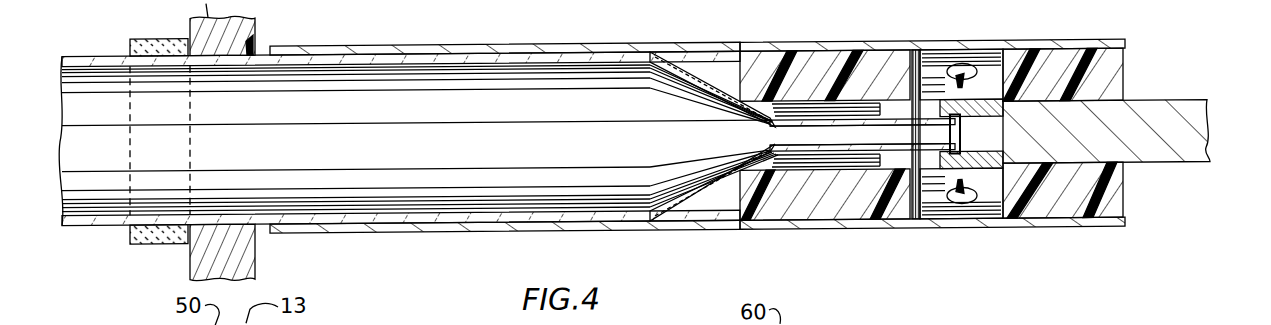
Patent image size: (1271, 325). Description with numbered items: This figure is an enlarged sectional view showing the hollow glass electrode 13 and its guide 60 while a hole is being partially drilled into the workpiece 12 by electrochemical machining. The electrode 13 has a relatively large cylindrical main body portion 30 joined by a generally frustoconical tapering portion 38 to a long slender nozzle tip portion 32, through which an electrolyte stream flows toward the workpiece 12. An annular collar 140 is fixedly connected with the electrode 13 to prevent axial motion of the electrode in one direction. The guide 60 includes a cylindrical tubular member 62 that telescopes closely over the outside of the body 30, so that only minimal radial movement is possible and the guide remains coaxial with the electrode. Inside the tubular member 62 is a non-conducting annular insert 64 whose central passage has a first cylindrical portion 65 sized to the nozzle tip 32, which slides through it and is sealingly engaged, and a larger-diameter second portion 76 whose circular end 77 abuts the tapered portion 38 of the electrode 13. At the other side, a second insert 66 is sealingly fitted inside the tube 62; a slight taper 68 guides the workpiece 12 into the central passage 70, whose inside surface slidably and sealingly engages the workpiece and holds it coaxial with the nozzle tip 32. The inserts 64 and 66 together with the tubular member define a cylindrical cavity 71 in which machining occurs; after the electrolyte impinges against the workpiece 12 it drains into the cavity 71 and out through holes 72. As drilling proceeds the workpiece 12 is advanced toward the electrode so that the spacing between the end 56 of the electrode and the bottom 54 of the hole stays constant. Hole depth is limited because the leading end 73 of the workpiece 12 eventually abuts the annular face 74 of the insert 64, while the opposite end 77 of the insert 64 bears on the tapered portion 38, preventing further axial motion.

The workpiece 12 is at (1209, 130).
The electrode 13 is at (255, 36).
The main body portion 30 is at (520, 44).
The nozzle tip portion 32 is at (793, 152).
The tapering portion 38 is at (677, 65).
The bottom of the hole 54 is at (956, 111).
The end of the electrode 56 is at (958, 155).
The guide 60 is at (738, 34).
The tubular member 62 is at (793, 50).
The insert 64 is at (848, 66).
The first cylindrical portion 65 is at (934, 114).
The second insert 66 is at (1076, 72).
The taper 68 is at (1094, 111).
The central passage 70 is at (1124, 43).
The cavity 71 is at (1063, 213).
The holes 72 is at (968, 68).
The leading end 73 is at (908, 214).
The annular face 74 is at (956, 216).
The second portion 76 is at (866, 167).
The end of the insert 77 is at (715, 172).
The annular collar 140 is at (142, 36).